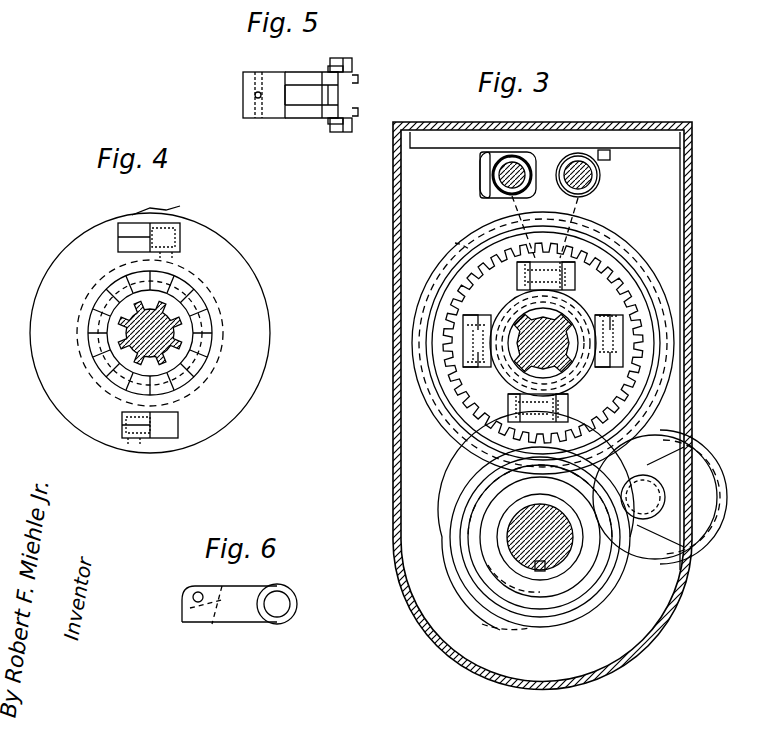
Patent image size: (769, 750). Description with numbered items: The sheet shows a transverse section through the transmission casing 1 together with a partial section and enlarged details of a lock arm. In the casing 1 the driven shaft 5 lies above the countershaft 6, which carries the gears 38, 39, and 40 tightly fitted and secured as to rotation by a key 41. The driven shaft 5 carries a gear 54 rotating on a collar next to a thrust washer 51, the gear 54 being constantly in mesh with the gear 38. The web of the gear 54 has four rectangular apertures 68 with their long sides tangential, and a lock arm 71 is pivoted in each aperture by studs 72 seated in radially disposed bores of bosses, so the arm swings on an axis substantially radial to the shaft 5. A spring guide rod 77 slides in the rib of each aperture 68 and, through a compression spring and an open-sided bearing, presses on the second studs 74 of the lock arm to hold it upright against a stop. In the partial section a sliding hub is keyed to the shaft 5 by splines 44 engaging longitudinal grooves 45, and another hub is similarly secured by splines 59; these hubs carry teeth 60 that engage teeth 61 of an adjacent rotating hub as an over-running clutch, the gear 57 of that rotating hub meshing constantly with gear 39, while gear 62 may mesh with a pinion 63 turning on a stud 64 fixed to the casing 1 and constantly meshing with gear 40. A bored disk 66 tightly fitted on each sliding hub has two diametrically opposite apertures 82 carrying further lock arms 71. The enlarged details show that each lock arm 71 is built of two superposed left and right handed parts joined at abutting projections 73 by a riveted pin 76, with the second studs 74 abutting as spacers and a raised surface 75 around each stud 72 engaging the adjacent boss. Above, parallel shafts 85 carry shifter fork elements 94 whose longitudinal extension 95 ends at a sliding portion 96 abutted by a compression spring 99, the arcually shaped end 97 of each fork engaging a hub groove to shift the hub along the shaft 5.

In FIG. 3, the transmission casing 1 is at (396, 243).
In FIG. 3, the driven shaft 5 is at (590, 335).
In FIG. 4, the driven shaft 5 is at (185, 340).
In FIG. 3, the countershaft 6 is at (512, 535).
In FIG. 3, the gear 38 is at (475, 470).
In FIG. 3, the gear 39 is at (488, 583).
In FIG. 3, the gear 40 is at (498, 618).
In FIG. 3, the key 41 is at (542, 572).
In FIG. 3, the splines 44 is at (563, 312).
In FIG. 3, the longitudinal grooves 45 is at (610, 385).
In FIG. 4, the longitudinal grooves 45 is at (185, 368).
In FIG. 3, the thrust washer 51 is at (498, 380).
In FIG. 3, the gear 54 is at (575, 320).
In FIG. 3, the gear 57 is at (655, 347).
In FIG. 4, the splines 59 is at (212, 340).
In FIG. 4, the teeth 60 is at (96, 368).
In FIG. 4, the teeth 61 is at (90, 341).
In FIG. 3, the gear 62 is at (672, 372).
In FIG. 3, the pinion 63 is at (685, 428).
In FIG. 3, the stud 64 is at (652, 480).
In FIG. 4, the bored disk 66 is at (238, 265).
In FIG. 3, the rectangular apertures 68 is at (580, 272).
In FIG. 3, the lock arm 71 is at (520, 278).
In FIG. 4, the lock arm 71 is at (172, 238).
In FIG. 5, the studs 72 is at (360, 57).
In FIG. 6, the studs 72 is at (298, 604).
In FIG. 5, the abutting projections 73 is at (248, 100).
In FIG. 6, the abutting projections 73 is at (190, 607).
In FIG. 5, the second stud 74 is at (328, 104).
In FIG. 6, the second stud 74 is at (277, 591).
In FIG. 5, the raised surface 75 is at (330, 66).
In FIG. 6, the raised surface 75 is at (276, 625).
In FIG. 5, the pin 76 is at (266, 120).
In FIG. 6, the pin 76 is at (198, 592).
In FIG. 3, the spring guide rod 77 is at (462, 345).
In FIG. 4, the spring guide rod 77 is at (143, 230).
In FIG. 4, the rectangular apertures 82 is at (131, 230).
In FIG. 3, the shafts 85 is at (535, 170).
In FIG. 3, the shifter fork element 94 is at (600, 173).
In FIG. 4, the shifter fork element 94 is at (178, 205).
In FIG. 3, the longitudinal extension 95 is at (481, 170).
In FIG. 3, the end of longitudinal extension 96 is at (512, 195).
In FIG. 3, the arcually shaped end 97 is at (442, 240).
In FIG. 4, the arcually shaped end 97 is at (215, 298).
In FIG. 3, the compression spring 99 is at (496, 196).